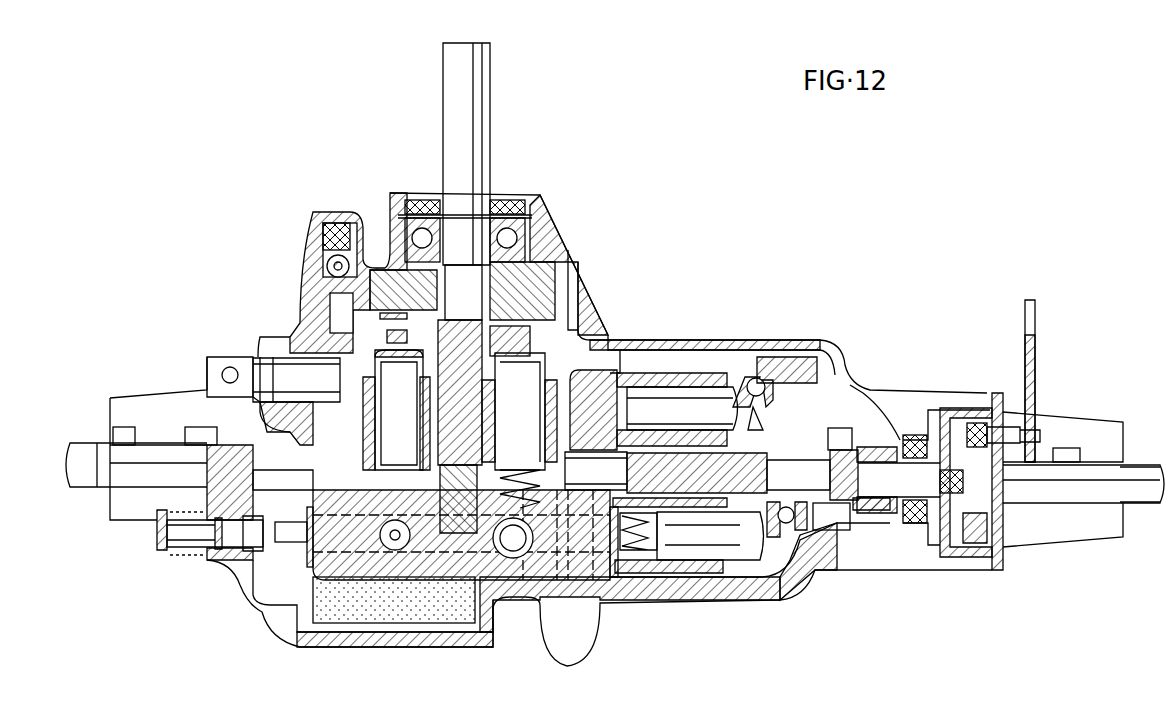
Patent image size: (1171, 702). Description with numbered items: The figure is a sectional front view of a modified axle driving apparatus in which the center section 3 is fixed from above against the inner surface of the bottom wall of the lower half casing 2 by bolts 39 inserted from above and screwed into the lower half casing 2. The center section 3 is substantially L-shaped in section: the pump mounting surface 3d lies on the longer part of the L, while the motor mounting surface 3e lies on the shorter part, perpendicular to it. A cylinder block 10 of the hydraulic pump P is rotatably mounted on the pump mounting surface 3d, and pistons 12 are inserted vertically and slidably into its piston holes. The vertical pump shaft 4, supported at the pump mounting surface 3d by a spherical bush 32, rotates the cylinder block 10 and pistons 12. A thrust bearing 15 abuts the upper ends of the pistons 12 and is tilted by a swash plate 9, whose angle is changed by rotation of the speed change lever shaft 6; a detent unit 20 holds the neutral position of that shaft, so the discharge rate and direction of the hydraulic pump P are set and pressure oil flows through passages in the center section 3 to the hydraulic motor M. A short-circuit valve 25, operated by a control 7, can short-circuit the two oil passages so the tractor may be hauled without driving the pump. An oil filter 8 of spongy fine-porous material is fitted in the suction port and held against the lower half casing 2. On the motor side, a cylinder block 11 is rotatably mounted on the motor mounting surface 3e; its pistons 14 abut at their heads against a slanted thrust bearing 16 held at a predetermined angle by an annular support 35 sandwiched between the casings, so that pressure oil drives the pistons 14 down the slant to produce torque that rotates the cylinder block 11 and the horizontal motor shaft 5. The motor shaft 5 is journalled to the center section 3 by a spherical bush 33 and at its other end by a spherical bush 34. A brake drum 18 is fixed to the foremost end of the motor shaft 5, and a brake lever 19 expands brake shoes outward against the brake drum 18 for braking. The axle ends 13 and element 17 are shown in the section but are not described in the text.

The lower half casing 2 is at (672, 600).
The center section 3 is at (300, 565).
The pump mounting surface 3d is at (530, 520).
The motor mounting surface 3e is at (625, 372).
The pump shaft 4 is at (490, 54).
The motor shaft 5 is at (818, 474).
The speed change lever shaft 6 is at (236, 357).
The control 7 is at (160, 550).
The oil filter 8 is at (410, 625).
The swash plate 9 is at (548, 258).
The cylinder block 10 is at (668, 340).
The cylinder block 11 is at (727, 575).
The pistons 12 is at (524, 420).
The tie rod 13 is at (92, 500).
The pistons 14 is at (680, 410).
The thrust bearing 15 is at (590, 320).
The thrust bearing 16 is at (768, 403).
The retainer 17 is at (840, 428).
The brake drum 18 is at (975, 572).
The brake lever 19 is at (1025, 305).
The detent unit 20 is at (326, 266).
The short-circuit valve 25 is at (287, 522).
The spherical bush 32 is at (512, 629).
The spherical bush 33 is at (596, 430).
The spherical bush 34 is at (885, 430).
The annular support 35 is at (800, 357).
The bolts 39 is at (320, 470).
The hydraulic motor M is at (695, 361).
The hydraulic pump P is at (346, 426).